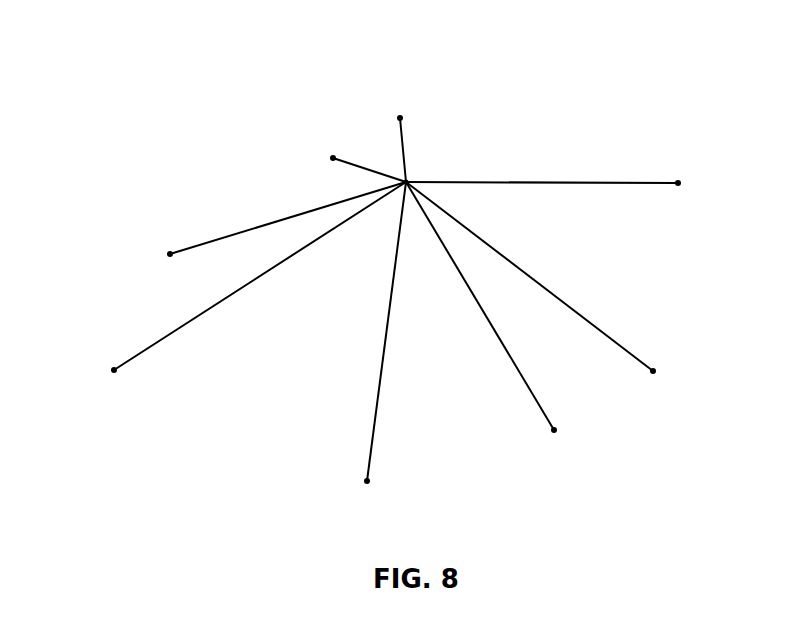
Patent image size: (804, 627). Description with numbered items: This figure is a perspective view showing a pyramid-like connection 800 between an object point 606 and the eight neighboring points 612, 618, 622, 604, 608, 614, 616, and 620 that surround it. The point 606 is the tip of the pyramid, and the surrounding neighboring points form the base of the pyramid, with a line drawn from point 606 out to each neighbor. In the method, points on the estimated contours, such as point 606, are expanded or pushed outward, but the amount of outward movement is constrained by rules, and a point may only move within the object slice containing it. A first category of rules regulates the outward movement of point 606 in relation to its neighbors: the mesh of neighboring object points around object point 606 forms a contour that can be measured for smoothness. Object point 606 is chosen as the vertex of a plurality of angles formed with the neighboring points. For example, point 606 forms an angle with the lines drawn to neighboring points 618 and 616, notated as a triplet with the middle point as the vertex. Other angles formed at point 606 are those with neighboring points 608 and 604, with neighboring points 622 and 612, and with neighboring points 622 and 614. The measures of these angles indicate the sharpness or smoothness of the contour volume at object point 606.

The pyramid-like connection 800 is at (284, 44).
The point 606 is at (407, 180).
The neighboring point 612 is at (401, 116).
The neighboring point 604 is at (333, 157).
The neighboring point 618 is at (679, 182).
The neighboring point 614 is at (170, 253).
The neighboring point 616 is at (113, 369).
The neighboring point 620 is at (366, 480).
The neighboring point 608 is at (555, 429).
The neighboring point 622 is at (654, 370).